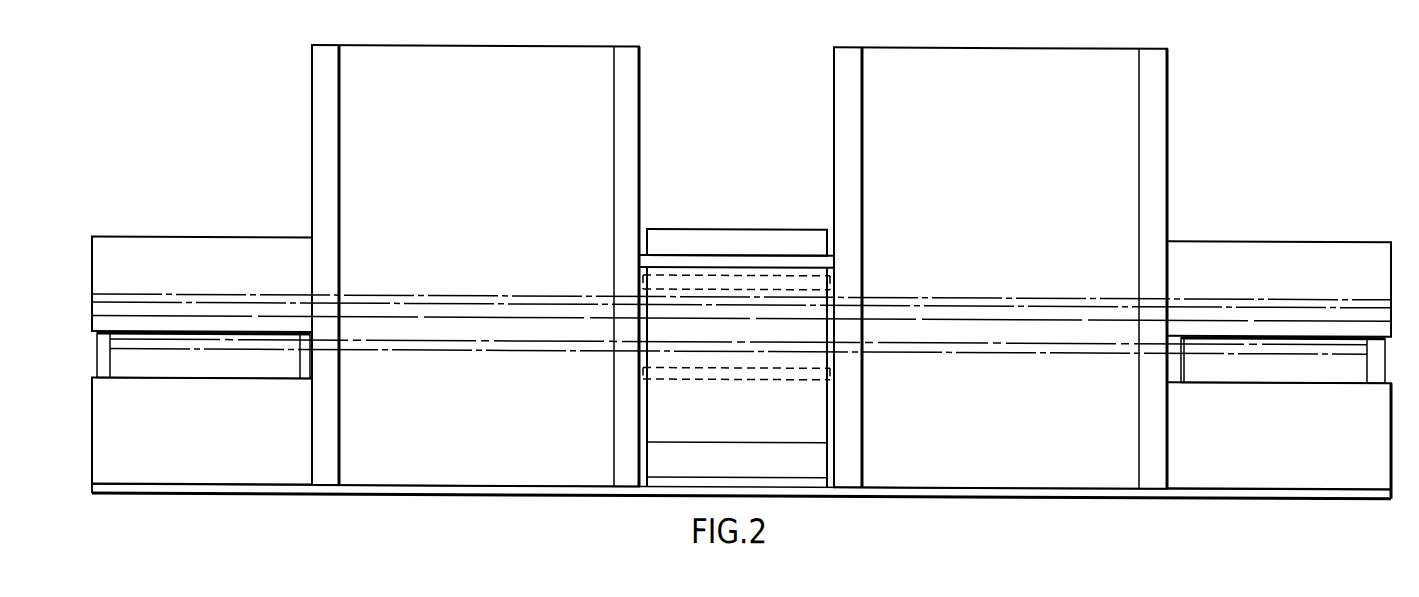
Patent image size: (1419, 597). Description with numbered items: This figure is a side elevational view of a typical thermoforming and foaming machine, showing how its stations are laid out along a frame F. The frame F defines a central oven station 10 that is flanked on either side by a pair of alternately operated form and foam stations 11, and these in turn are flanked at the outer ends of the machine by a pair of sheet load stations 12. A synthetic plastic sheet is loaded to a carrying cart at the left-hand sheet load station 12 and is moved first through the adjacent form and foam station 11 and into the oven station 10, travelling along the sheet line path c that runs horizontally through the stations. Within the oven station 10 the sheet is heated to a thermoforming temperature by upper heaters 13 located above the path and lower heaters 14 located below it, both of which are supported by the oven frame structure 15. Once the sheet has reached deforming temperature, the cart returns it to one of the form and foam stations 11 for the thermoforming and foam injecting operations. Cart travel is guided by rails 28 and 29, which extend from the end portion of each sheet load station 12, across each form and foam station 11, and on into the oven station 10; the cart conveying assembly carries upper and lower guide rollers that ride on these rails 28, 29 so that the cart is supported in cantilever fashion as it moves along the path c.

The oven station 10 is at (700, 224).
The form and foam station 11 is at (525, 44).
The sheet load station 12 is at (218, 236).
The upper heaters 13 is at (742, 278).
The lower heaters 14 is at (733, 376).
The oven frame structure 15 is at (660, 418).
The rail 28 is at (433, 297).
The rail 29 is at (592, 351).
The frame F is at (1168, 186).
The sheet line path c is at (527, 317).